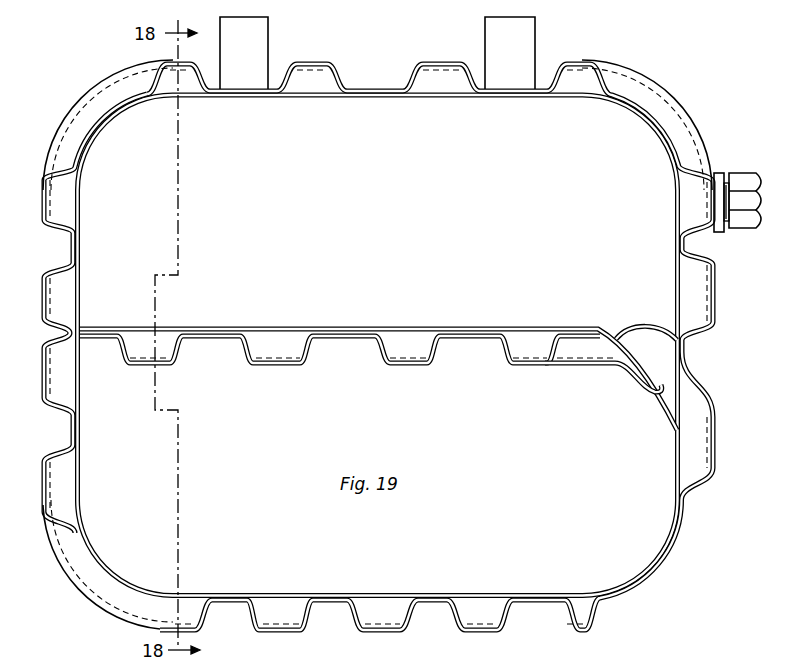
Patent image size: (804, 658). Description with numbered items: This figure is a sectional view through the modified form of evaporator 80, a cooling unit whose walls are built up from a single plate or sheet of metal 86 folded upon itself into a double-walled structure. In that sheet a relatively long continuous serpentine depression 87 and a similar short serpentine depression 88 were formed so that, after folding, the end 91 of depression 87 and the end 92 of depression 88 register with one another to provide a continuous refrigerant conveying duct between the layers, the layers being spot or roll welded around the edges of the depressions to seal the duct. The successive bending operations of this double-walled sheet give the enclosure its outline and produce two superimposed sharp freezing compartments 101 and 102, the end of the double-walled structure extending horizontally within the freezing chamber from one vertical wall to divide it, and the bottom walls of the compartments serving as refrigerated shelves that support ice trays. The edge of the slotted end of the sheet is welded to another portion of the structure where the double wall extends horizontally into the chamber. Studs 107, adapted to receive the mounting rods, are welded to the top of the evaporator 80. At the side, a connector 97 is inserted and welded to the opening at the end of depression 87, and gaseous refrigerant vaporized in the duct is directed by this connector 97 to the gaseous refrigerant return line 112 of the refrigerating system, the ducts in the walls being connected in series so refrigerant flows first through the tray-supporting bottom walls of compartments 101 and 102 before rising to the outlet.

The evaporator 80 is at (90, 110).
The plate or single sheet of metal 86 is at (410, 329).
The serpentine depression 87 is at (678, 126).
The serpentine depression 88 is at (279, 350).
The end of depression 87 91 is at (647, 327).
The end of depression 88 92 is at (657, 395).
The connector 97 is at (718, 172).
The sharp freezing compartment 101 is at (595, 137).
The sharp freezing compartment 102 is at (603, 446).
The studs 107 is at (500, 33).
The gaseous refrigerant return line 112 is at (747, 224).